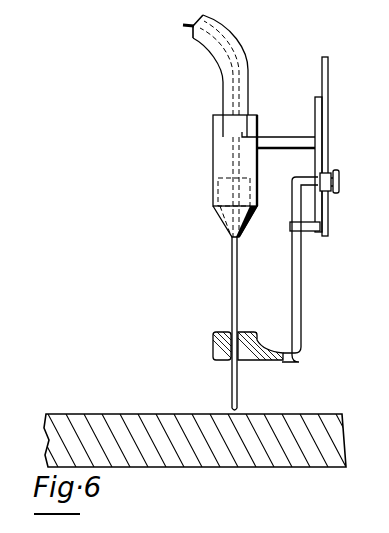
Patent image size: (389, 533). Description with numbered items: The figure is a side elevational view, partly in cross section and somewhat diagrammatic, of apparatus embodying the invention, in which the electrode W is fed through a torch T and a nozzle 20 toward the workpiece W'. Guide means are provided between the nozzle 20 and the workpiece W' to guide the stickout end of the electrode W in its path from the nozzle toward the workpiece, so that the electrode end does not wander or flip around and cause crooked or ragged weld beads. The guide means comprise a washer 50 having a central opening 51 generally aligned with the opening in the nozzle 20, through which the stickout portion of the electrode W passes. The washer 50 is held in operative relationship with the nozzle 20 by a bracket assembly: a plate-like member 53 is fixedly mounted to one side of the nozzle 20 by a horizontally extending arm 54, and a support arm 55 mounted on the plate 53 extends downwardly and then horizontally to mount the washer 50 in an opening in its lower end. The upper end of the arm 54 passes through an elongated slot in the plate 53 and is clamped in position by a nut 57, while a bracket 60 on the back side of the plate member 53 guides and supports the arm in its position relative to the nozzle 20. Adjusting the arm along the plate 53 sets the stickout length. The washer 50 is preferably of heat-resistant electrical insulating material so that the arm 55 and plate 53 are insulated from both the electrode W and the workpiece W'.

The welding torch tube T is at (238, 43).
The nozzle 20 is at (218, 197).
The horizontally extending arm 54 is at (278, 137).
The plate-like member 53 is at (325, 57).
The nut 57 is at (337, 172).
The support arm 55 is at (302, 285).
The bracket 60 is at (318, 234).
The washer 50 is at (246, 332).
The central opening 51 is at (228, 332).
The electrode W is at (206, 323).
The workpiece W' is at (197, 415).